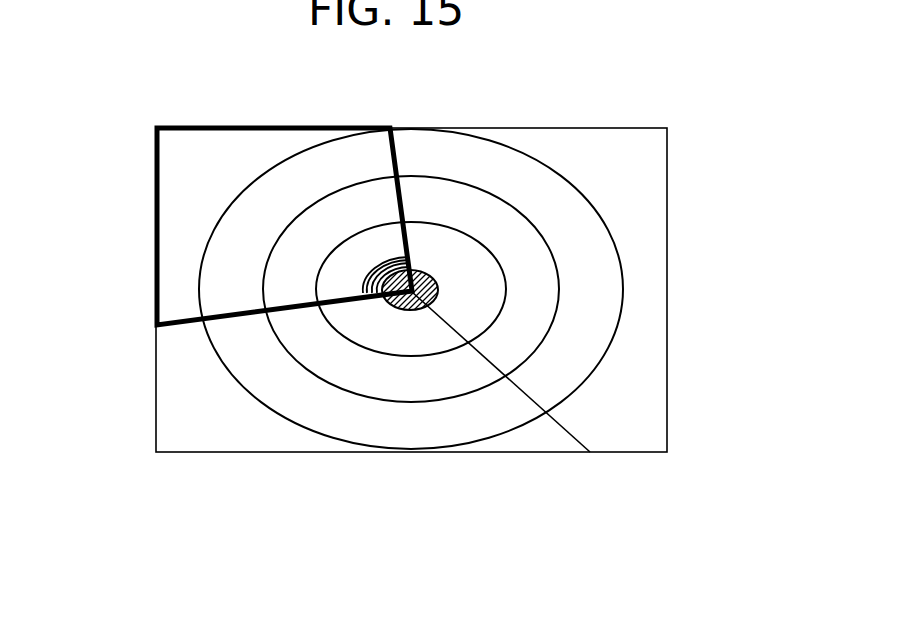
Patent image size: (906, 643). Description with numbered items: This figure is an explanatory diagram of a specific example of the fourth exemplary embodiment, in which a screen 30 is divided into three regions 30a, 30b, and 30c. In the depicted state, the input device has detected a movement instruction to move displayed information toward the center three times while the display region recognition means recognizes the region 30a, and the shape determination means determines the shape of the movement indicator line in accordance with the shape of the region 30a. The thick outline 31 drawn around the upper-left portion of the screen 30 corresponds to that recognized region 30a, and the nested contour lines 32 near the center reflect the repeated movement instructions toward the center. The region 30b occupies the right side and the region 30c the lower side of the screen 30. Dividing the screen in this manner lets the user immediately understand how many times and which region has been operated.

The screen 30 is at (195, 452).
The region 30a is at (172, 302).
The region 30b is at (637, 342).
The region 30c is at (247, 440).
The thick-lined frame section 31 is at (157, 232).
The contour lines near center 32 is at (388, 256).